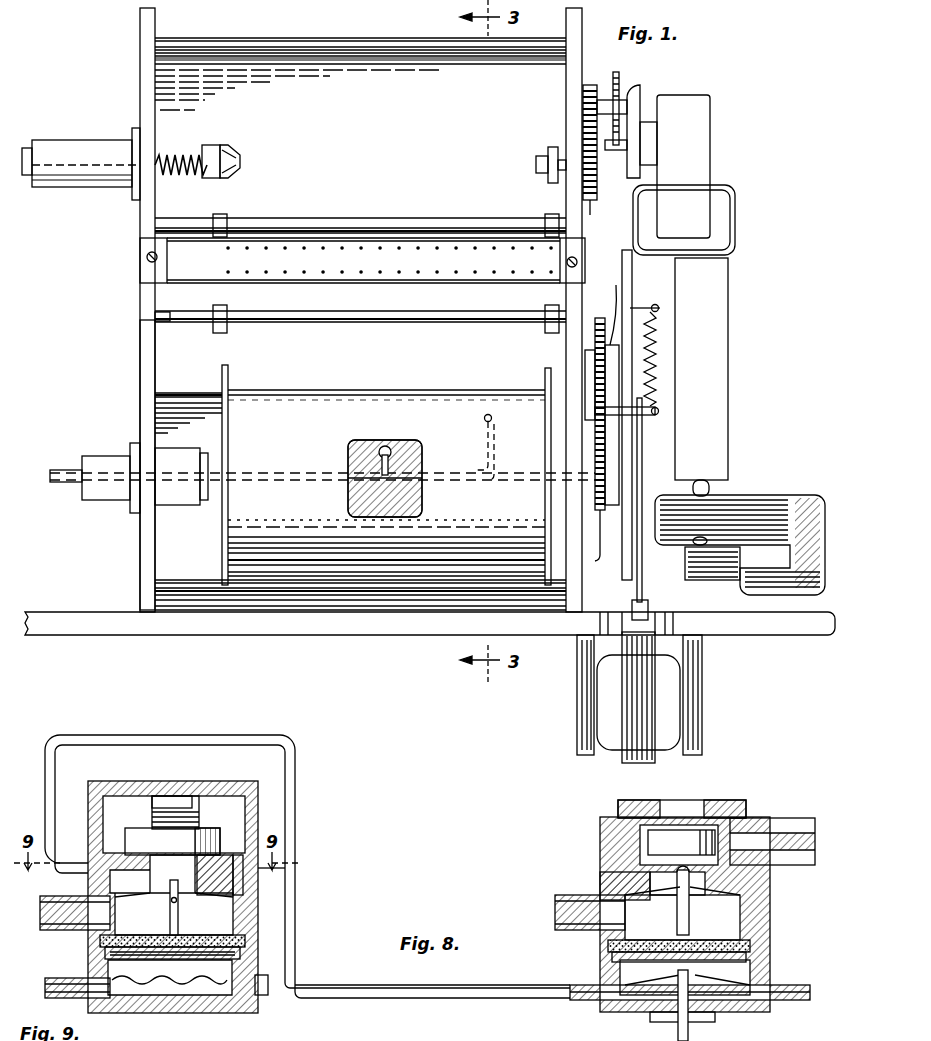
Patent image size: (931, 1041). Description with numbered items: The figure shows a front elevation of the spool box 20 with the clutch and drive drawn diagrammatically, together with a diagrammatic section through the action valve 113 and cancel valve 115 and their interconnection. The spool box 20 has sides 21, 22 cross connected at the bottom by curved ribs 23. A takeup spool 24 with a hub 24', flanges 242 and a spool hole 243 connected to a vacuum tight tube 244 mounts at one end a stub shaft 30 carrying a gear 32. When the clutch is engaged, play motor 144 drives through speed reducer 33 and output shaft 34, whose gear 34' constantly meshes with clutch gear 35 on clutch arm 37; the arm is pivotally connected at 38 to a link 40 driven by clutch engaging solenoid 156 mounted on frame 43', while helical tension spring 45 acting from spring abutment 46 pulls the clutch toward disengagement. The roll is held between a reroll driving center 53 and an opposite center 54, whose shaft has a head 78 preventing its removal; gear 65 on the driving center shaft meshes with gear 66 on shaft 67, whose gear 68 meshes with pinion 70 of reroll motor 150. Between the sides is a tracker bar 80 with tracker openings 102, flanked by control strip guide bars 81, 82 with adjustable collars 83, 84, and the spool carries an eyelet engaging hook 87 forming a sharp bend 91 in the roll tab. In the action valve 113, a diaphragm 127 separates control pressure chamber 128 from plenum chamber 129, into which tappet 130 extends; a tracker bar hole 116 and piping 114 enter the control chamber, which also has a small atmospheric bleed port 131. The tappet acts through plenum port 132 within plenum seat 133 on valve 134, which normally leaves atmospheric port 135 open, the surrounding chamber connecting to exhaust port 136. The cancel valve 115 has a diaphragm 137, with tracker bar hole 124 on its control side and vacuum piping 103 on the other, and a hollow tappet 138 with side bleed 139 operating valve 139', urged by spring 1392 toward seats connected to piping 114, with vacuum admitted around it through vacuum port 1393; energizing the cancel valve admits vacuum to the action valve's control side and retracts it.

In FIG. 1, the spool box 20 is at (142, 298).
In FIG. 1, the side 21 is at (148, 337).
In FIG. 1, the side 22 is at (572, 340).
In FIG. 1, the ribs 23 is at (176, 388).
In FIG. 1, the takeup spool 24 is at (360, 486).
In FIG. 1, the hub 24' is at (386, 381).
In FIG. 1, the flanges 242 is at (228, 378).
In FIG. 1, the spool hole 243 is at (484, 418).
In FIG. 1, the vacuum tight tube 244 is at (444, 490).
In FIG. 1, the stub shaft 30 is at (552, 484).
In FIG. 1, the gear 32 is at (600, 548).
In FIG. 1, the speed reducer 33 is at (730, 360).
In FIG. 1, the output shaft 34 is at (603, 392).
In FIG. 1, the gear 34' is at (602, 315).
In FIG. 1, the clutch gear 35 is at (605, 386).
In FIG. 1, the clutch arm 37 is at (545, 374).
In FIG. 1, the pivot 38 is at (659, 412).
In FIG. 1, the link 40 is at (642, 470).
In FIG. 1, the frame 43' is at (430, 642).
In FIG. 1, the helical tension spring 45 is at (655, 360).
In FIG. 1, the spring abutment 46 is at (660, 308).
In FIG. 1, the reroll driving center 53 is at (550, 155).
In FIG. 1, the center 54 is at (228, 157).
In FIG. 1, the gear 65 is at (602, 212).
In FIG. 1, the gear 66 is at (590, 86).
In FIG. 1, the shaft 67 is at (604, 100).
In FIG. 1, the gear 68 is at (619, 76).
In FIG. 1, the pinion 70 is at (623, 150).
In FIG. 1, the head 78 is at (27, 148).
In FIG. 1, the tracker bar 80 is at (168, 272).
In FIG. 1, the control strip guide bar 81 is at (259, 232).
In FIG. 1, the control strip guide bar 82 is at (327, 315).
In FIG. 1, the adjustable collars 83 is at (218, 216).
In FIG. 1, the adjustable collars 84 is at (549, 216).
In FIG. 1, the eyelet engaging hook 87 is at (348, 458).
In FIG. 1, the sharp bend 91 is at (389, 444).
In FIG. 1, the tracker openings 102 is at (333, 249).
In FIG. 1, the play motor 144 is at (745, 510).
In FIG. 1, the reroll motor 150 is at (700, 144).
In FIG. 1, the clutch engaging solenoid 156 is at (676, 700).
In FIG. 8, the vacuum piping 103 is at (52, 922).
In FIG. 8, the action valve 113 is at (745, 920).
In FIG. 8, the piping 114 is at (352, 990).
In FIG. 8, the cancel valve 115 is at (92, 798).
In FIG. 8, the tracker bar hole 116 is at (808, 994).
In FIG. 8, the tracker bar hole 124 is at (52, 980).
In FIG. 8, the diaphragm 127 is at (620, 950).
In FIG. 8, the control pressure chamber 128 is at (716, 1006).
In FIG. 8, the plenum chamber 129 is at (652, 912).
In FIG. 8, the tappet 130 is at (690, 920).
In FIG. 8, the atmospheric bleed port 131 is at (678, 1036).
In FIG. 8, the plenum port 132 is at (660, 880).
In FIG. 8, the plenum seat 133 is at (640, 858).
In FIG. 8, the valve 134 is at (662, 840).
In FIG. 8, the atmospheric port 135 is at (690, 799).
In FIG. 8, the exhaust port 136 is at (790, 836).
In FIG. 8, the diaphragm 137 is at (213, 994).
In FIG. 8, the hollow tappet 138 is at (168, 916).
In FIG. 8, the side bleed 139 is at (174, 907).
In FIG. 8, the valve 139' is at (172, 803).
In FIG. 8, the spring 1392 is at (194, 788).
In FIG. 8, the vacuum port 1393 is at (245, 882).